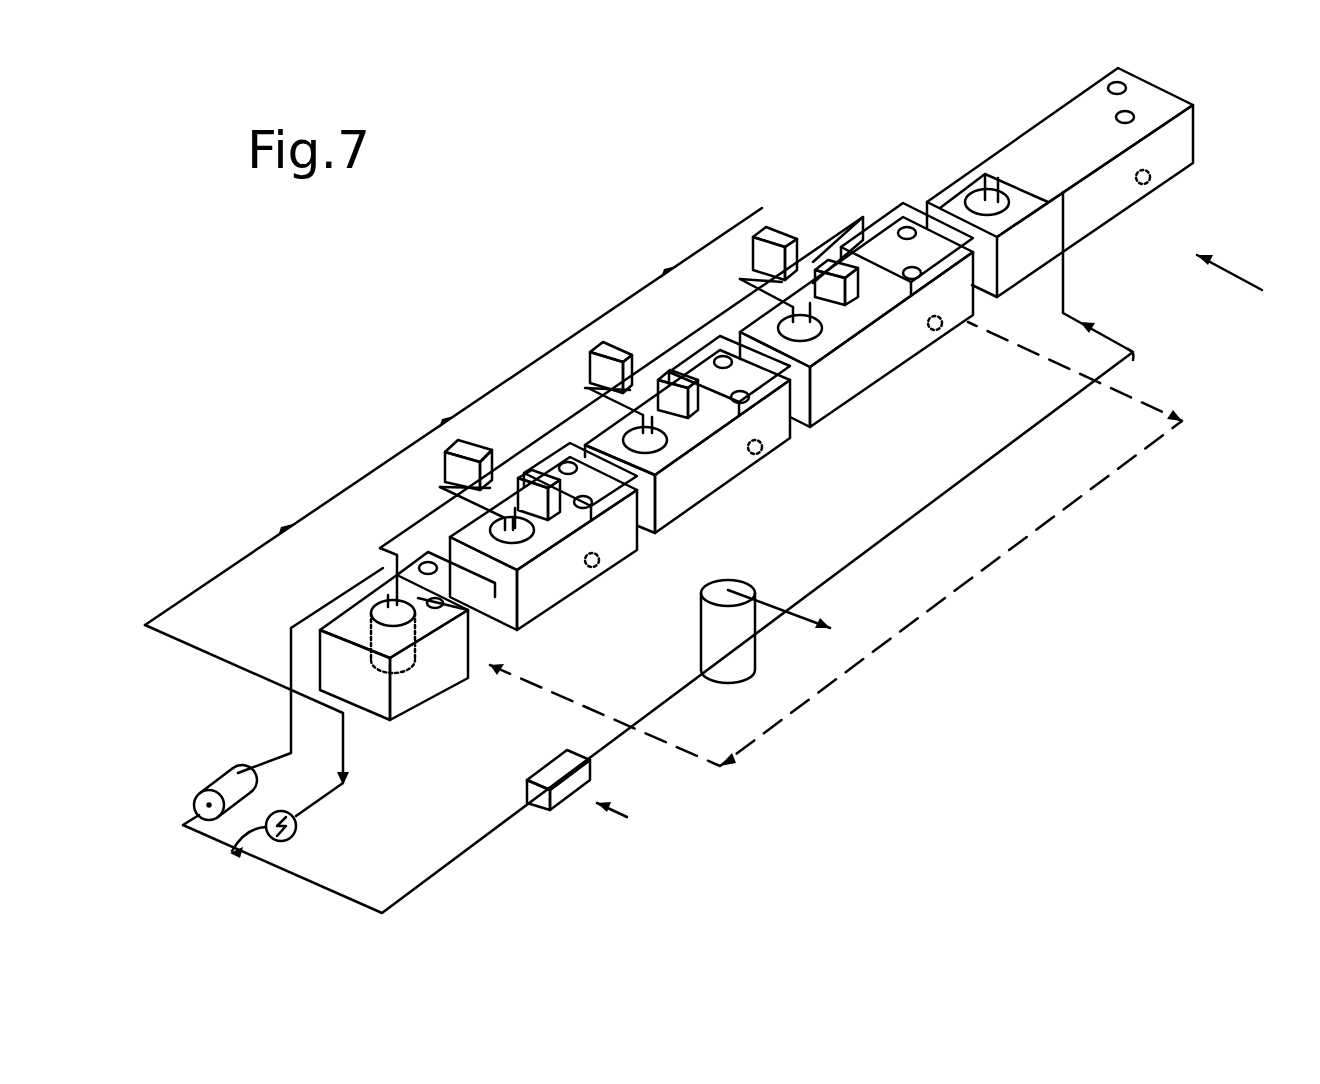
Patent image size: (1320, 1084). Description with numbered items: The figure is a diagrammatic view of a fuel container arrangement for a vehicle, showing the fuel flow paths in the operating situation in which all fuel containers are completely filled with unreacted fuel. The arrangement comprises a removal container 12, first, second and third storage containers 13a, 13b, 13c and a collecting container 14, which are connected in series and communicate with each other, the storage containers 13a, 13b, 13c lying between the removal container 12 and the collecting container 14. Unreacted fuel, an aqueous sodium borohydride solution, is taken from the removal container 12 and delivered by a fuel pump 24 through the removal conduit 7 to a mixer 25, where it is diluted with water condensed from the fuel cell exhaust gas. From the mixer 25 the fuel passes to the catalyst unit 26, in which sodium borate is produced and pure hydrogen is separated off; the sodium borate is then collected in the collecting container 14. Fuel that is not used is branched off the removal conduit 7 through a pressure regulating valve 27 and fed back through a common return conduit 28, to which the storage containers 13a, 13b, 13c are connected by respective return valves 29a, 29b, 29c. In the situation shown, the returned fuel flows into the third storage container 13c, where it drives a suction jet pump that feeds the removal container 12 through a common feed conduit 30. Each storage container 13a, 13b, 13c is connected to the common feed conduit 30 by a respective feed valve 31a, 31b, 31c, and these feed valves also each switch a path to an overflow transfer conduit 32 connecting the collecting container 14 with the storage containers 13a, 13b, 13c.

The removal conduit 7 is at (290, 716).
The removal container 12 is at (420, 690).
The first storage container 13a is at (562, 584).
The second storage container 13b is at (723, 477).
The third storage container 13c is at (887, 357).
The collecting container 14 is at (1108, 205).
The fuel pump 24 is at (232, 777).
The mixer 25 is at (588, 773).
The catalyst unit 26 is at (757, 663).
The pressure regulating valve 27 is at (214, 837).
The common return conduit 28 is at (233, 562).
The return valve 29a is at (457, 443).
The return valve 29b is at (593, 343).
The return valve 29c is at (757, 225).
The common feed conduit 30 is at (840, 227).
The feed valve 31a is at (535, 475).
The feed valve 31b is at (677, 370).
The feed valve 31c is at (833, 258).
The overflow transfer conduit 32 is at (1000, 252).